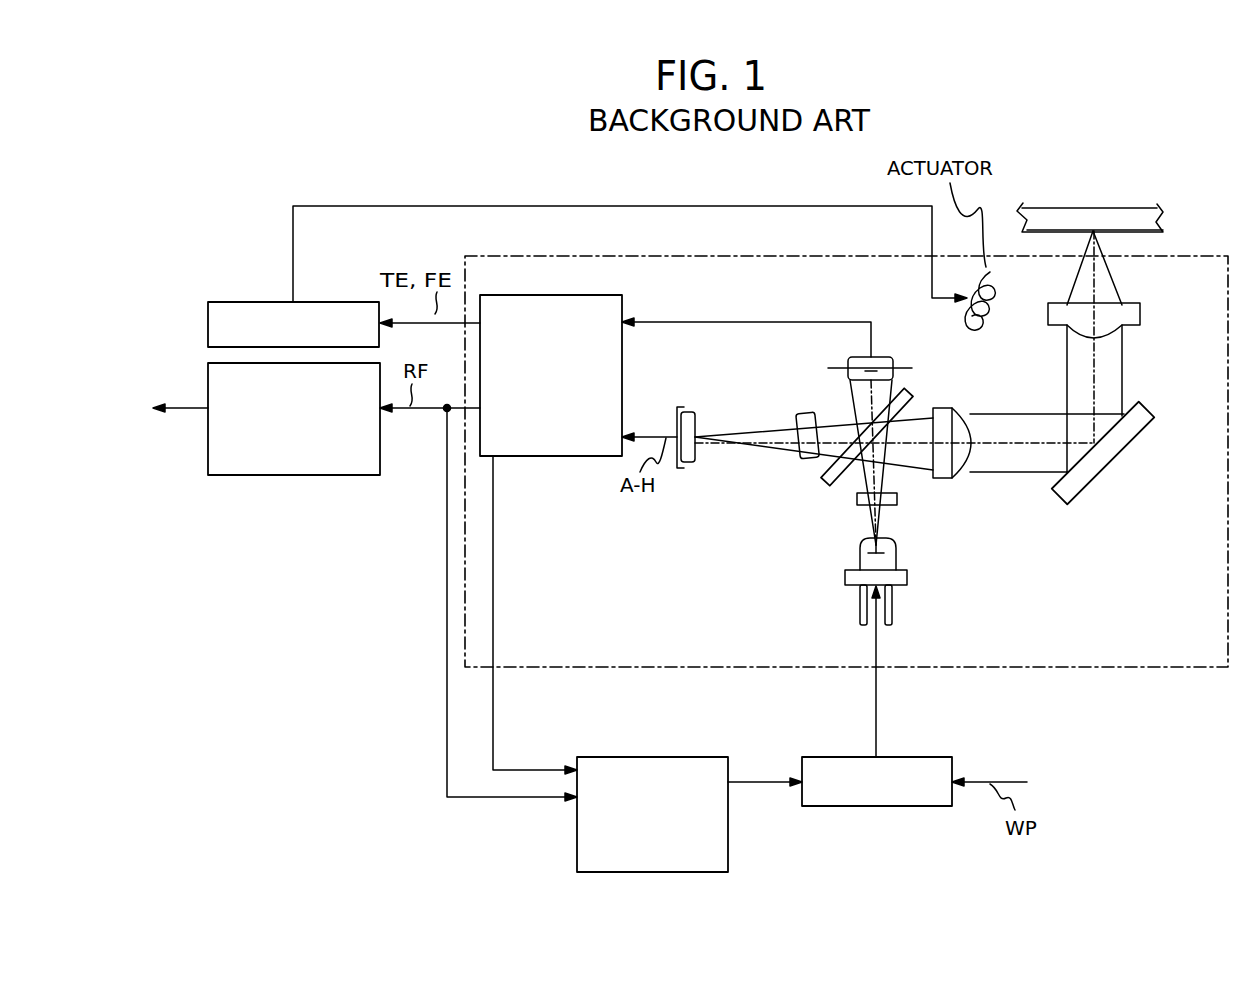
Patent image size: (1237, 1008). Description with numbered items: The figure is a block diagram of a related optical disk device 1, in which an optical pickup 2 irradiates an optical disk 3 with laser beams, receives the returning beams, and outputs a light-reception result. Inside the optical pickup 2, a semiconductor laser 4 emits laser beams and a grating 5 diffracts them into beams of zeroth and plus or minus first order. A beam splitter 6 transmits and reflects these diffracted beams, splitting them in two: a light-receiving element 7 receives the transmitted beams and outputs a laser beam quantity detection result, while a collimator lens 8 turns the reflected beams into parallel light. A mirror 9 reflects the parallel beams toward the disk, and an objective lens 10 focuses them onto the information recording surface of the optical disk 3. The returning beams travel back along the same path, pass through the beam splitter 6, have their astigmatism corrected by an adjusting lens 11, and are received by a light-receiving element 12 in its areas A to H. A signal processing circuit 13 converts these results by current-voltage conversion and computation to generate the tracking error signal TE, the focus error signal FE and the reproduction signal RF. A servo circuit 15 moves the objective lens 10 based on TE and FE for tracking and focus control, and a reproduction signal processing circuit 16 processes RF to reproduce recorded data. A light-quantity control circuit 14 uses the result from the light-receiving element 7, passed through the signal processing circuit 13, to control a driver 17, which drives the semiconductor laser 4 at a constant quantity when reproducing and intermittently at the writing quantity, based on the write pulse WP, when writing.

The optical disk device 1 is at (246, 775).
The optical pickup 2 is at (1078, 668).
The optical disk 3 is at (1097, 222).
The semiconductor laser 4 is at (890, 555).
The grating 5 is at (897, 500).
The beam splitter 6 is at (834, 480).
The light-receiving element 7 is at (900, 366).
The collimator lens 8 is at (950, 408).
The mirror 9 is at (1135, 418).
The objective lens 10 is at (1125, 312).
The adjusting lens 11 is at (804, 462).
The light-receiving element 12 is at (690, 410).
The signal processing circuit 13 is at (597, 456).
The light-quantity control circuit 14 is at (655, 757).
The servo circuit 15 is at (208, 318).
The reproduction signal processing circuit 16 is at (208, 388).
The driver 17 is at (905, 757).